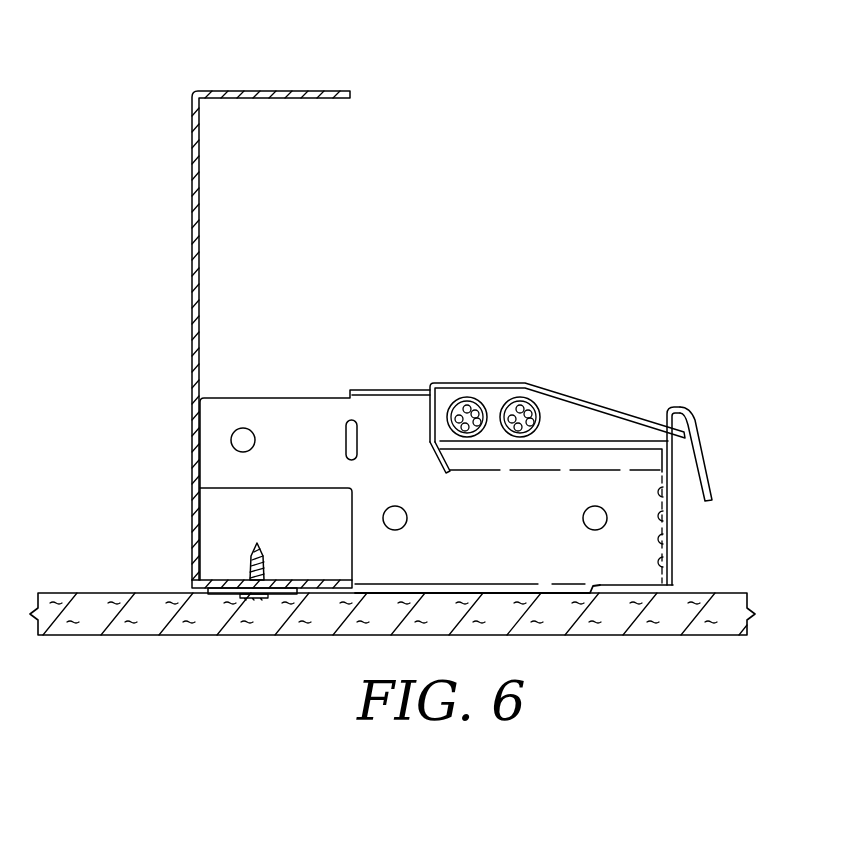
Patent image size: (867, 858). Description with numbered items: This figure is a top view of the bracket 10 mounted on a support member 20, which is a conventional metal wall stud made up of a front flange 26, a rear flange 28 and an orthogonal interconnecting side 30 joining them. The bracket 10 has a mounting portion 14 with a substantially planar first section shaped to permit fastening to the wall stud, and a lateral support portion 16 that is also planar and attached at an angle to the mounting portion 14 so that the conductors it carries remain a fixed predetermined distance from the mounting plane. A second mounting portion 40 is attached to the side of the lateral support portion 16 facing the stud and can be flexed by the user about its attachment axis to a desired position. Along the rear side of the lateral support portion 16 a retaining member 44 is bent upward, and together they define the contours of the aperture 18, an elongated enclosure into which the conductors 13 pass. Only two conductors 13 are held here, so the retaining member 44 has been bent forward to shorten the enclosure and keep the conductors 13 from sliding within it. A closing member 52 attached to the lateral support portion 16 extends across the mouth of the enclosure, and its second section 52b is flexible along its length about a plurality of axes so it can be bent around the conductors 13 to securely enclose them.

The bracket 10 is at (697, 352).
The conductors 13 is at (462, 400).
The mounting portion 14 is at (293, 594).
The lateral support portion 16 is at (620, 555).
The aperture 18 is at (583, 427).
The support member 20 is at (193, 262).
The front flange 26 is at (235, 580).
The rear flange 28 is at (283, 90).
The orthogonal interconnecting side 30 is at (207, 339).
The second mounting portion 40 is at (220, 468).
The retaining member 44 is at (522, 400).
The closing member 52 is at (673, 518).
The second section 52b is at (703, 437).